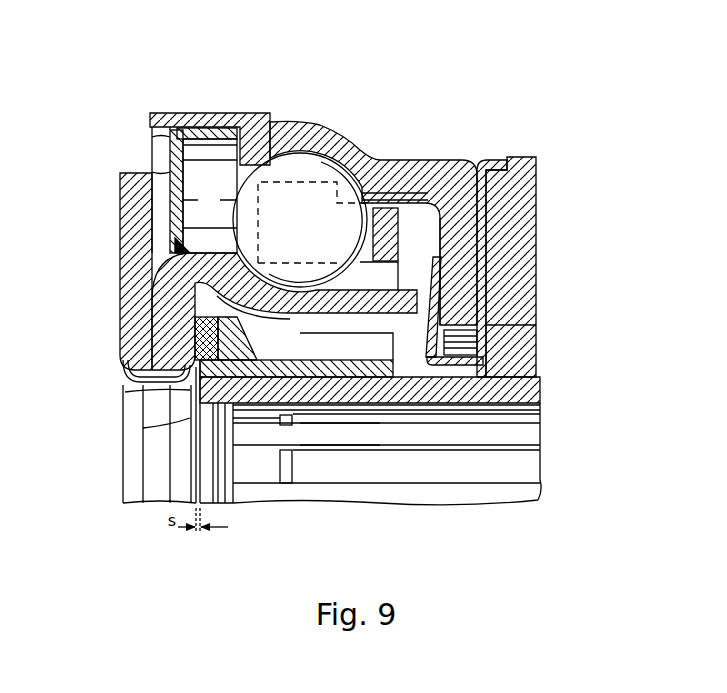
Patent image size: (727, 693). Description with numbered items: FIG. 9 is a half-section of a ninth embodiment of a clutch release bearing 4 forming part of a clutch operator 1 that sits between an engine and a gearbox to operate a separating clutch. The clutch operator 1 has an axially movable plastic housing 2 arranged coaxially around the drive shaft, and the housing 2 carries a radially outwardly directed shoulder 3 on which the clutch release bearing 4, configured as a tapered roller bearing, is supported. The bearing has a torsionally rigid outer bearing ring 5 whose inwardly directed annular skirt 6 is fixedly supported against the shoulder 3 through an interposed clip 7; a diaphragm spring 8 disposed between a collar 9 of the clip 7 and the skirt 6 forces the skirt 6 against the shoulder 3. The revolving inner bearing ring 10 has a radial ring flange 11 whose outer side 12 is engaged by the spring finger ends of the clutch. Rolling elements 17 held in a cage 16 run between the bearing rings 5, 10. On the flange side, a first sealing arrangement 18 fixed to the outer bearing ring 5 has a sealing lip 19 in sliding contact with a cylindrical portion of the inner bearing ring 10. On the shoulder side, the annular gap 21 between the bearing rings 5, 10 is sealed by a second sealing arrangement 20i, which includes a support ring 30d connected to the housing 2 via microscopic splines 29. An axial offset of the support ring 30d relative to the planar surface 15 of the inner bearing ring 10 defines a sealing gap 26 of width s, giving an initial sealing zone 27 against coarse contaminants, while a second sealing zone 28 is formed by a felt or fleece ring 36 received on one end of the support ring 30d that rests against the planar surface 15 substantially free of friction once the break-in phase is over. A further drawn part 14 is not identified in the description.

The clutch operator 1 is at (382, 120).
The housing 2 is at (540, 390).
The shoulder 3 is at (535, 222).
The clutch release bearing 4 is at (107, 96).
The outer bearing ring 5 is at (324, 134).
The annular skirt 6 is at (462, 248).
The clip 7 is at (520, 189).
The diaphragm spring 8 is at (462, 334).
The collar 9 is at (481, 361).
The inner bearing ring 10 is at (536, 326).
The radial ring flange 11 is at (126, 193).
The outer side 12 is at (121, 240).
The cylindrical portion 14 is at (165, 388).
The planar surface 15 is at (190, 305).
The cage 16 is at (381, 207).
The rolling elements 17 is at (300, 160).
The first sealing arrangement 18 is at (188, 126).
The sealing lip 19 is at (194, 249).
The second sealing arrangement 20i is at (288, 393).
The annular gap 21 is at (441, 300).
The sealing gap 26 is at (196, 448).
The sealing zone 27 is at (122, 372).
The sealing zone 28 is at (238, 345).
The microscopic splines 29 is at (350, 382).
The support ring 30d is at (321, 382).
The felt ring or fleece ring 36 is at (205, 333).